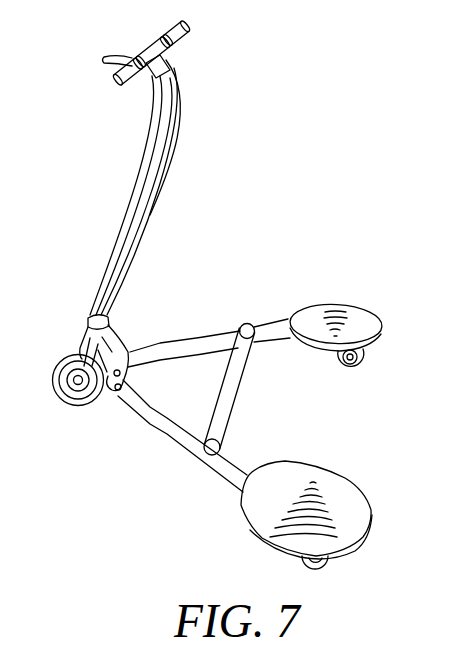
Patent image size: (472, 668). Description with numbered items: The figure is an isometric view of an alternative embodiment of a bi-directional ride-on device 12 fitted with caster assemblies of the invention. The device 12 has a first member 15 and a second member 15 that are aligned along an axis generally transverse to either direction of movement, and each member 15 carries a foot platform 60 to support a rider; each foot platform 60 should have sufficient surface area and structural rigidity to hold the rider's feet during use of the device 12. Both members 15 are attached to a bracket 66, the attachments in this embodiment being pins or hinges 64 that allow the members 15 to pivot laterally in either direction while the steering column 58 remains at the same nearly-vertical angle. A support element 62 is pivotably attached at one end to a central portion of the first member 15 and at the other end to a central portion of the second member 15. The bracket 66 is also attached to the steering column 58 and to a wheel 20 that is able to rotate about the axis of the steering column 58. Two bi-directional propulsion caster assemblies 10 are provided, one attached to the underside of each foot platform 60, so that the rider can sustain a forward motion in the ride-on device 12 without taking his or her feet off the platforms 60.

The bi-directional propulsion caster assembly 10 is at (349, 366).
The bi-directional ride-on device 12 is at (251, 164).
The member 15 is at (181, 342).
The wheel 20 is at (53, 392).
The steering column 58 is at (141, 162).
The foot platform 60 is at (316, 308).
The support element 62 is at (238, 397).
The pin or hinge 64 is at (144, 345).
The bracket 66 is at (82, 333).